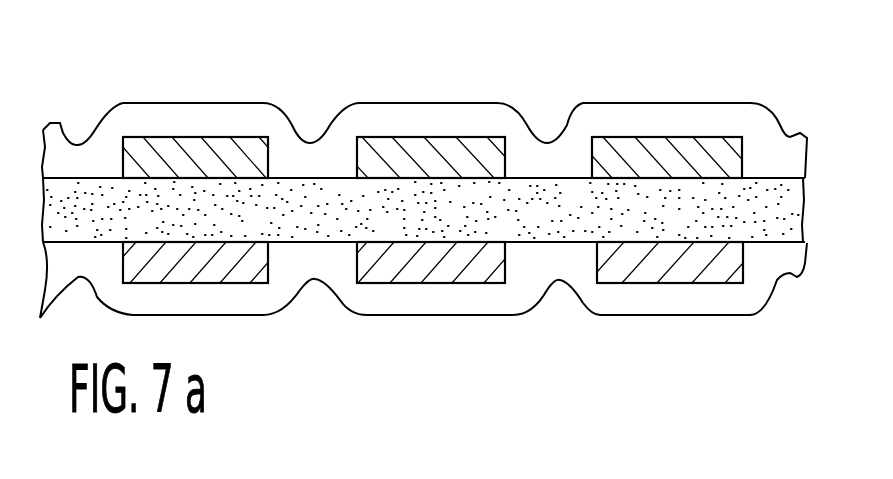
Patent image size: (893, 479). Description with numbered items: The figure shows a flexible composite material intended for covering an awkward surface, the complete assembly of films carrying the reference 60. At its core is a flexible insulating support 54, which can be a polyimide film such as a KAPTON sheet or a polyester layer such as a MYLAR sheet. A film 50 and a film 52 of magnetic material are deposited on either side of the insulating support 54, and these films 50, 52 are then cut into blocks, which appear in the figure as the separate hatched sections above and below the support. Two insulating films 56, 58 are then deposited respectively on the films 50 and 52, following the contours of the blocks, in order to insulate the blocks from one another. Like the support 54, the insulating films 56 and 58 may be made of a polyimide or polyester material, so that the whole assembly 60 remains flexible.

The film of magnetic material 50 is at (416, 121).
The film of magnetic material 52 is at (506, 296).
The flexible insulating support 54 is at (557, 190).
The insulating film 56 is at (200, 115).
The insulating film 58 is at (446, 297).
The assembly of films 60 is at (81, 82).